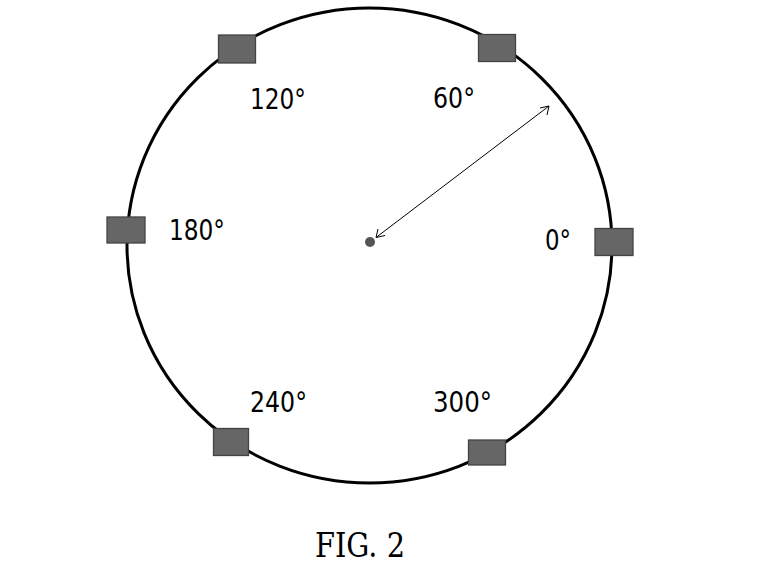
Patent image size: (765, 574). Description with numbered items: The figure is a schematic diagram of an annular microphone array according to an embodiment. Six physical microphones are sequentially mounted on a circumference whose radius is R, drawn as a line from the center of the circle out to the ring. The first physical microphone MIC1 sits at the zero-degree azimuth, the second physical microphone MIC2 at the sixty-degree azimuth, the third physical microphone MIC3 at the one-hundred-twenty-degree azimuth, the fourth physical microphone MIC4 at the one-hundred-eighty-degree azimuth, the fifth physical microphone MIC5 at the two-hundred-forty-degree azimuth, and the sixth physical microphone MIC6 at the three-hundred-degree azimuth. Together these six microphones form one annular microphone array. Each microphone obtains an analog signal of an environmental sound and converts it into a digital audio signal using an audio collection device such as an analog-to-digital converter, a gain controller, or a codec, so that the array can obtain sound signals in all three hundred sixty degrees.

The physical microphone MIC1 is at (656, 224).
The physical microphone MIC2 is at (542, 37).
The physical microphone MIC3 is at (187, 36).
The physical microphone MIC4 is at (86, 213).
The physical microphone MIC5 is at (188, 458).
The physical microphone MIC6 is at (526, 468).
The radius R is at (457, 176).